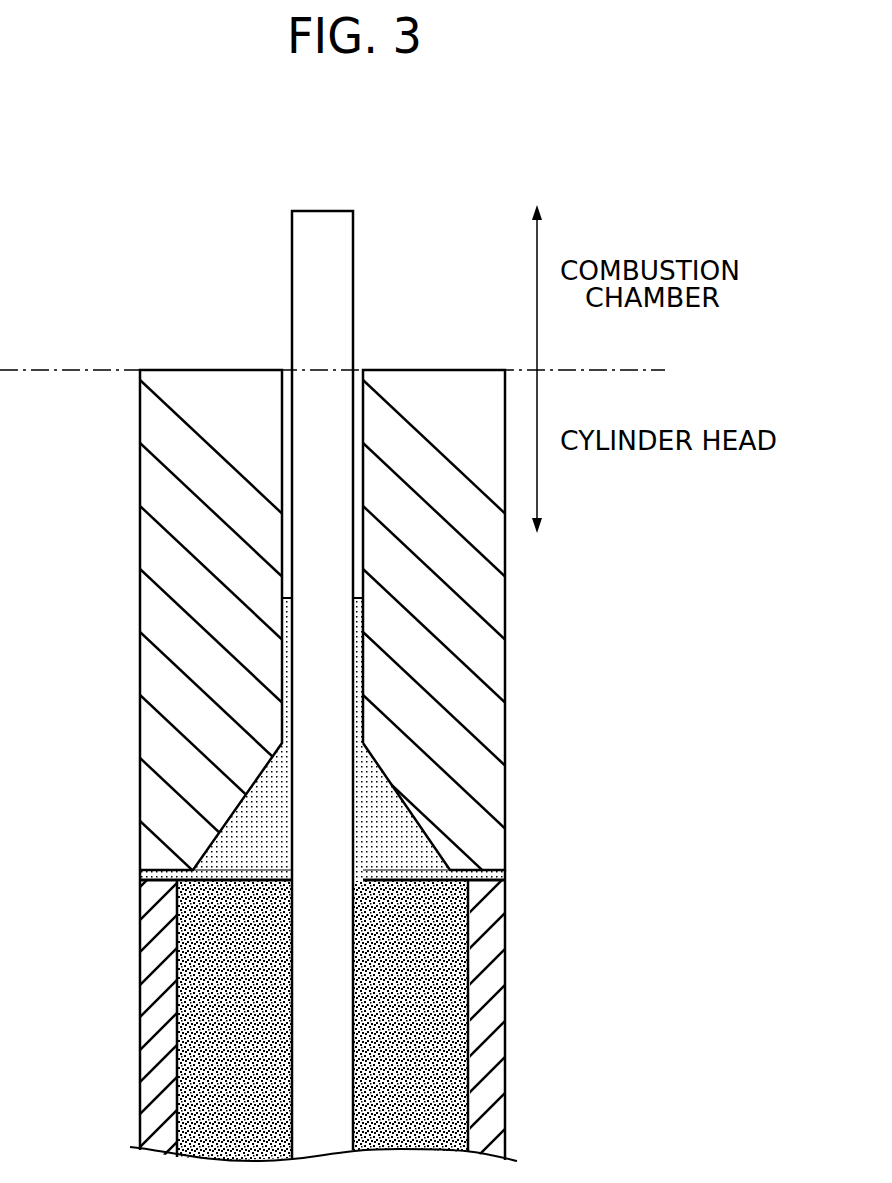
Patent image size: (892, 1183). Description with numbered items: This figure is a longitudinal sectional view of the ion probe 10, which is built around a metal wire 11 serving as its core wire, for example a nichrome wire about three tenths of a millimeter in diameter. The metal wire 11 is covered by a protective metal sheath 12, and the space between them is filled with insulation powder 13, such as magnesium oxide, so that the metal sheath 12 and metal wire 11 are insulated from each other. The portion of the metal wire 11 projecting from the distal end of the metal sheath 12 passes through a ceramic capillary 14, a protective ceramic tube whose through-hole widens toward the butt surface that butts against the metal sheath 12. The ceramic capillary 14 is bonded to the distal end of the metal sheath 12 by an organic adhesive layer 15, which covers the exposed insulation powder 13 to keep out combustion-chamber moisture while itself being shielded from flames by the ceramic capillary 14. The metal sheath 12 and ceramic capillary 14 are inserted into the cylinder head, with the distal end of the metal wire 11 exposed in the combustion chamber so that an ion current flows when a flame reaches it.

The ion probe 10 is at (420, 255).
The metal wire 11 is at (320, 218).
The metal sheath 12 is at (500, 937).
The insulation powder 13 is at (468, 1090).
The ceramic capillary 14 is at (147, 545).
The organic adhesive layer 15 is at (240, 823).